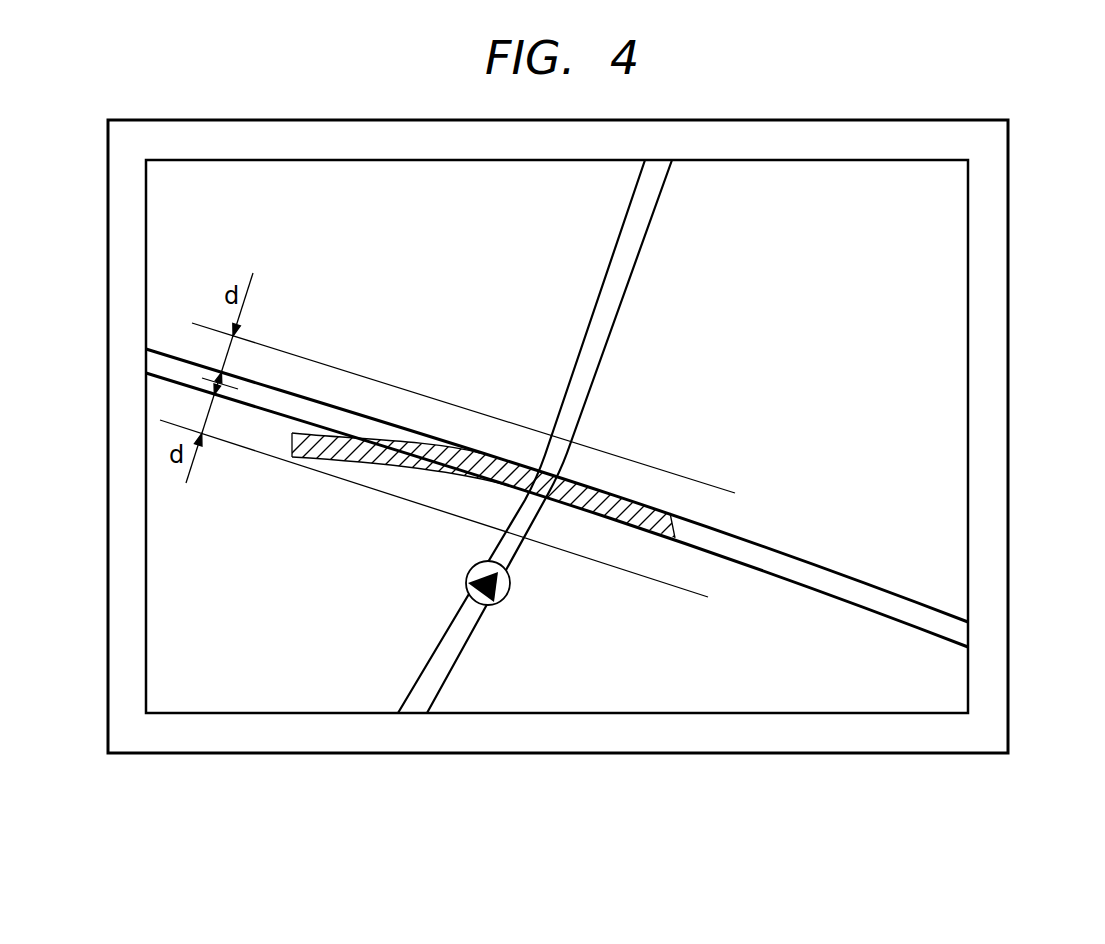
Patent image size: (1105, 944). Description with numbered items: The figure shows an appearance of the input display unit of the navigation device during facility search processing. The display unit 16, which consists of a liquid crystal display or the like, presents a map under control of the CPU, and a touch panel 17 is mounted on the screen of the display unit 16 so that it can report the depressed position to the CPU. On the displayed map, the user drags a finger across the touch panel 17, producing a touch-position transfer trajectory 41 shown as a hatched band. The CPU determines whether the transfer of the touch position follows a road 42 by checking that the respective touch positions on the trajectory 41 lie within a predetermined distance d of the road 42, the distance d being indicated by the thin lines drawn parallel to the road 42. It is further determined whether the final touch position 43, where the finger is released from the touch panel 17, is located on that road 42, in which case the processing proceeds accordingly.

The display unit 16 is at (1008, 302).
The touch panel 17 is at (968, 233).
The touch-position transfer trajectory 41 is at (378, 466).
The road 42 is at (857, 577).
The final touch position 43 is at (655, 533).